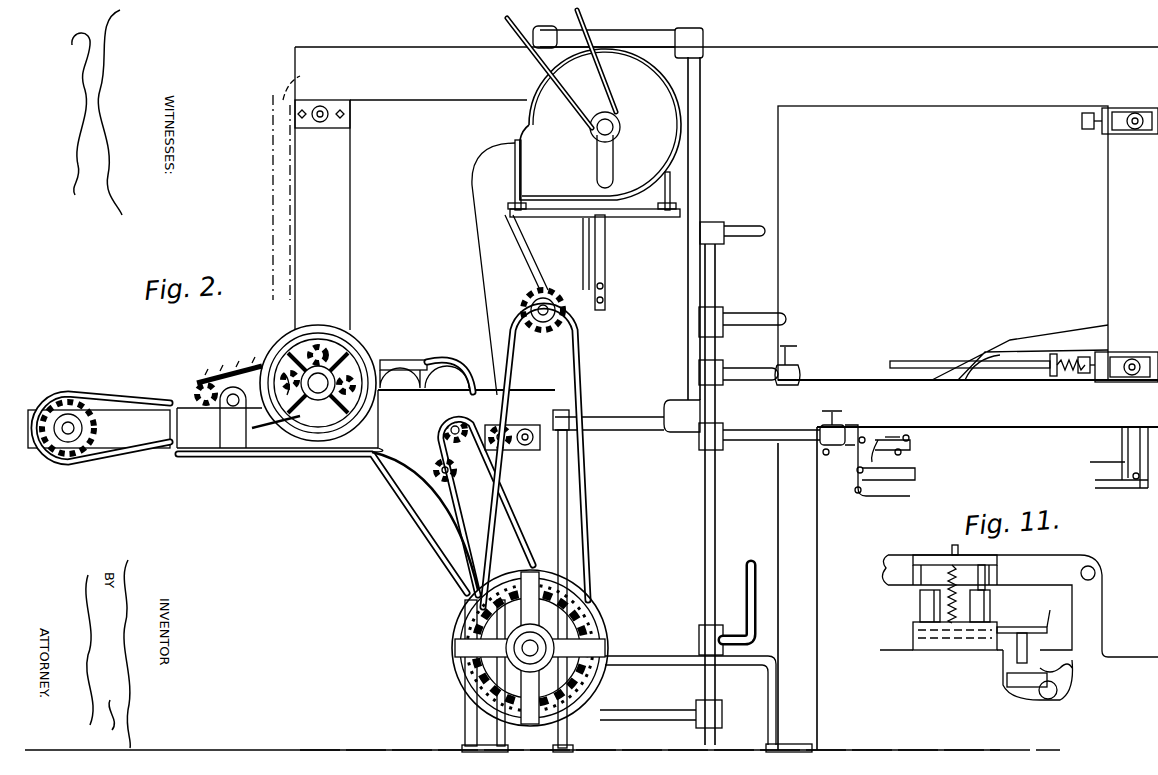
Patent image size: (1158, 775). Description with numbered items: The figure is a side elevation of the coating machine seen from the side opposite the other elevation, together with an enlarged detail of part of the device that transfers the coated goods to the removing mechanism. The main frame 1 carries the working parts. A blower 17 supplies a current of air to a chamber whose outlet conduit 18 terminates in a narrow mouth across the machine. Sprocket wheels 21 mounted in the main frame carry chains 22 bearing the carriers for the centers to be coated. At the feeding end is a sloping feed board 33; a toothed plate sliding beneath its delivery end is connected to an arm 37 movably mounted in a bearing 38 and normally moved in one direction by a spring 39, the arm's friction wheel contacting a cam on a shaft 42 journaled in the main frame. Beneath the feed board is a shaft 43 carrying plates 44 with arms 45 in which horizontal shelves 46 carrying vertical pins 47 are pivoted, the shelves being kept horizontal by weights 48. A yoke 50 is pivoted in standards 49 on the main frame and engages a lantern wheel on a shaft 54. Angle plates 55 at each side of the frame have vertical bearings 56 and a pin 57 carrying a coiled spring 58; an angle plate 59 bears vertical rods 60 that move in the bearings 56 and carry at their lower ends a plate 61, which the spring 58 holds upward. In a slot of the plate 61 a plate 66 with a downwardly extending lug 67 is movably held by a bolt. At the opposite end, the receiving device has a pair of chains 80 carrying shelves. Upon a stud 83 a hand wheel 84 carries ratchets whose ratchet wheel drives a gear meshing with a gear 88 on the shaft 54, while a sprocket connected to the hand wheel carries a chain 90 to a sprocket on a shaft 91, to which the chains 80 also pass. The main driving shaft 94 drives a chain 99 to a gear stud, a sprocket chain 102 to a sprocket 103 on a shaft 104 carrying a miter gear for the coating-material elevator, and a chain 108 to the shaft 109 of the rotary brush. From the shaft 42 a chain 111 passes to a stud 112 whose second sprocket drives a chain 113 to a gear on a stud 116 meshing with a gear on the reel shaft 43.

In FIG. 2, the main frame 1 is at (676, 389).
In FIG. 2, the blower 17 is at (594, 160).
In FIG. 2, the outlet conduit 18 is at (524, 240).
In FIG. 2, the sprocket wheels 21 is at (290, 98).
In FIG. 11, the chains 22 is at (1012, 688).
In FIG. 2, the sloping feed board 33 is at (943, 243).
In FIG. 2, the arm 37 is at (1020, 368).
In FIG. 2, the bearing 38 is at (1054, 377).
In FIG. 2, the spring 39 is at (1096, 340).
In FIG. 2, the shaft 42 is at (1138, 304).
In FIG. 2, the shaft 43 is at (863, 436).
In FIG. 2, the plates 44 is at (880, 438).
In FIG. 2, the arms 45 is at (902, 452).
In FIG. 2, the horizontal shelves 46 is at (910, 438).
In FIG. 2, the vertical pins 47 is at (903, 438).
In FIG. 2, the weights 48 is at (851, 480).
In FIG. 2, the standards 49 is at (403, 421).
In FIG. 11, the standards 49 is at (1080, 637).
In FIG. 2, the yoke 50 is at (404, 360).
In FIG. 11, the yoke 50 is at (992, 573).
In FIG. 2, the shaft 54 is at (330, 360).
In FIG. 11, the angle plates 55 is at (913, 635).
In FIG. 11, the vertical bearings 56 is at (920, 606).
In FIG. 11, the pin 57 is at (955, 545).
In FIG. 11, the spring 58 is at (950, 624).
In FIG. 11, the angle plate 59 is at (982, 565).
In FIG. 11, the vertical rods 60 is at (925, 568).
In FIG. 11, the plate 61 is at (1051, 608).
In FIG. 11, the plate 66 is at (1047, 630).
In FIG. 11, the lug 67 is at (1027, 646).
In FIG. 2, the chains 80 is at (128, 462).
In FIG. 2, the stud 83 is at (340, 400).
In FIG. 2, the hand wheel 84 is at (333, 362).
In FIG. 2, the gear 88 is at (322, 345).
In FIG. 2, the chain 90 is at (205, 378).
In FIG. 2, the shaft 91 is at (66, 440).
In FIG. 2, the main driving shaft 94 is at (528, 648).
In FIG. 2, the chain 99 is at (425, 521).
In FIG. 2, the sprocket chain 102 is at (555, 456).
In FIG. 2, the sprocket 103 is at (566, 322).
In FIG. 2, the shaft 104 is at (550, 305).
In FIG. 2, the chain 108 is at (498, 507).
In FIG. 2, the shaft 109 is at (462, 426).
In FIG. 2, the chain 111 is at (1122, 436).
In FIG. 2, the stud 112 is at (1095, 484).
In FIG. 2, the chain 113 is at (1090, 462).
In FIG. 2, the stud 116 is at (858, 475).